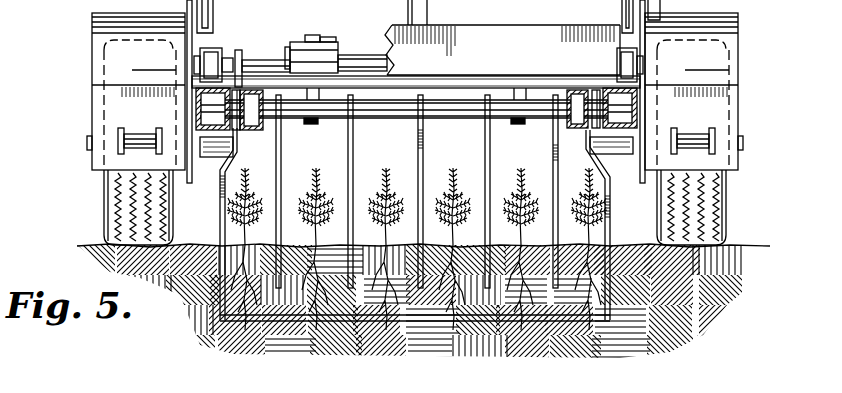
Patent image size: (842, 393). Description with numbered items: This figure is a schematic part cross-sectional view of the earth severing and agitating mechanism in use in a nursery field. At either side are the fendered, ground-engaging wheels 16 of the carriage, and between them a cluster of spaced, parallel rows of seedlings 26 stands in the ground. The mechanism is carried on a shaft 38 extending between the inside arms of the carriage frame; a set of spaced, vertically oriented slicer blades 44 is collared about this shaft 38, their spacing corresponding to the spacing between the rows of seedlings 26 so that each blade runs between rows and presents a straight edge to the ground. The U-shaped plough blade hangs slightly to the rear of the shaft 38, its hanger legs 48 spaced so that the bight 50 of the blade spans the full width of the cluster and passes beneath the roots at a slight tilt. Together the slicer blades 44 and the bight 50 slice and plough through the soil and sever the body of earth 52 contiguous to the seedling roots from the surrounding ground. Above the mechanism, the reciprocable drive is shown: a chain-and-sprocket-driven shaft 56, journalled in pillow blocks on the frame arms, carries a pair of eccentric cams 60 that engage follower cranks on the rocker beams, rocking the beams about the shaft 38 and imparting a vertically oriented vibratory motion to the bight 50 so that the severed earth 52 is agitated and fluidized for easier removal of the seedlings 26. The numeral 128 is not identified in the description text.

The ground-engaging wheels 16 is at (108, 210).
The seedlings 26 is at (311, 186).
The shaft 38 is at (392, 110).
The slicer blades 44 is at (487, 155).
The hanger legs 48 is at (222, 212).
The bight 50 is at (470, 325).
The body of earth 52 is at (360, 338).
The chain-and-sprocket-driven shaft 56 is at (263, 62).
The eccentric cams 60 is at (315, 52).
The sprocket housing 128 is at (212, 44).